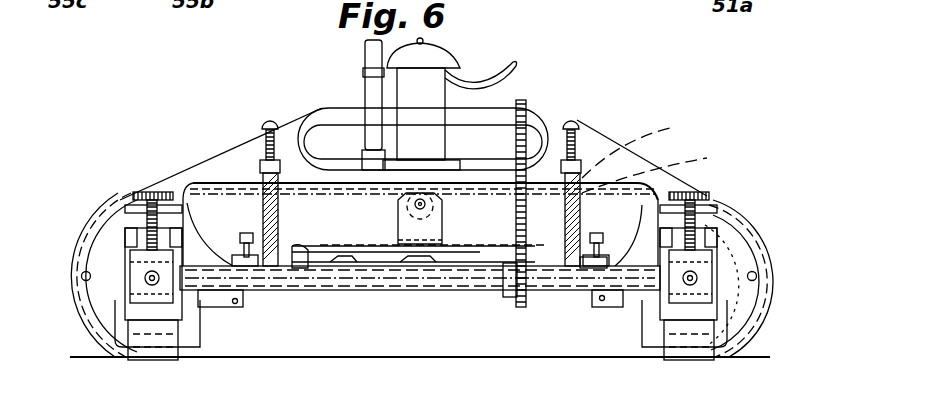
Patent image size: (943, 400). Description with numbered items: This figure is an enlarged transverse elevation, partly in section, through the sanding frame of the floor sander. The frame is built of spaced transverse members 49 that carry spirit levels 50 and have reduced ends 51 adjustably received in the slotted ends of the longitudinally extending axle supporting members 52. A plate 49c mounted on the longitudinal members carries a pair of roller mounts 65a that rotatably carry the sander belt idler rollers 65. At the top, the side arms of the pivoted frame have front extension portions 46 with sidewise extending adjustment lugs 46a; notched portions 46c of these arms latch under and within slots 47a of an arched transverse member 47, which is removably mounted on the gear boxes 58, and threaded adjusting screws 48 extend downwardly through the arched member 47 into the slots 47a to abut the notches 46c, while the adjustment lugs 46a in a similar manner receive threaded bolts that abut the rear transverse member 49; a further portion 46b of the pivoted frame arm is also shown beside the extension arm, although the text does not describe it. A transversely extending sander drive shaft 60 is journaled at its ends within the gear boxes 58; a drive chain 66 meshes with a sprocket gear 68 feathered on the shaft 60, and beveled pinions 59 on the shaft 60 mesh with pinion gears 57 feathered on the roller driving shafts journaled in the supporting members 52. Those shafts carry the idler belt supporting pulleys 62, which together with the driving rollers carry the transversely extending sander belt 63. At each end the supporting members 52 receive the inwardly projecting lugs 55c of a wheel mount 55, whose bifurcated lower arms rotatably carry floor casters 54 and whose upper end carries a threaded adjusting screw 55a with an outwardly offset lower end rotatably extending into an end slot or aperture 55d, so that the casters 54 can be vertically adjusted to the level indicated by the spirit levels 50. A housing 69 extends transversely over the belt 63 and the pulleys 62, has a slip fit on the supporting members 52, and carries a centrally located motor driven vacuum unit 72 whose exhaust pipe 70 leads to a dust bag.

The front extension portion 46 is at (567, 234).
The adjustment lug 46a is at (580, 263).
The bracket 46b is at (597, 273).
The notched portion 46c is at (664, 168).
The arched transverse member 47 is at (217, 158).
The slot 47a is at (646, 146).
The threaded adjusting screw 48 is at (578, 120).
The transverse member 49 is at (348, 292).
The plate 49c is at (480, 248).
The spirit level 50 is at (400, 262).
The reduced end 51 is at (723, 277).
The axle supporting member 52 is at (133, 262).
The floor caster 54 is at (143, 352).
The wheel mount 55 is at (180, 327).
The threaded adjusting screw 55a is at (150, 192).
The inwardly projecting lug 55c is at (220, 300).
The end slot or aperture 55d is at (673, 262).
The pinion gear 57 is at (90, 287).
The gear box 58 is at (728, 243).
The beveled pinion 59 is at (200, 252).
The sander drive shaft 60 is at (398, 282).
The idler belt supporting pulley 62 is at (200, 320).
The sander belt 63 is at (436, 357).
The sander belt idler roller 65 is at (446, 222).
The roller mount 65a is at (407, 220).
The drive chain 66 is at (524, 100).
The sprocket gear 68 is at (508, 294).
The housing 69 is at (480, 181).
The exhaust pipe 70 is at (365, 58).
The vacuum unit 72 is at (440, 97).